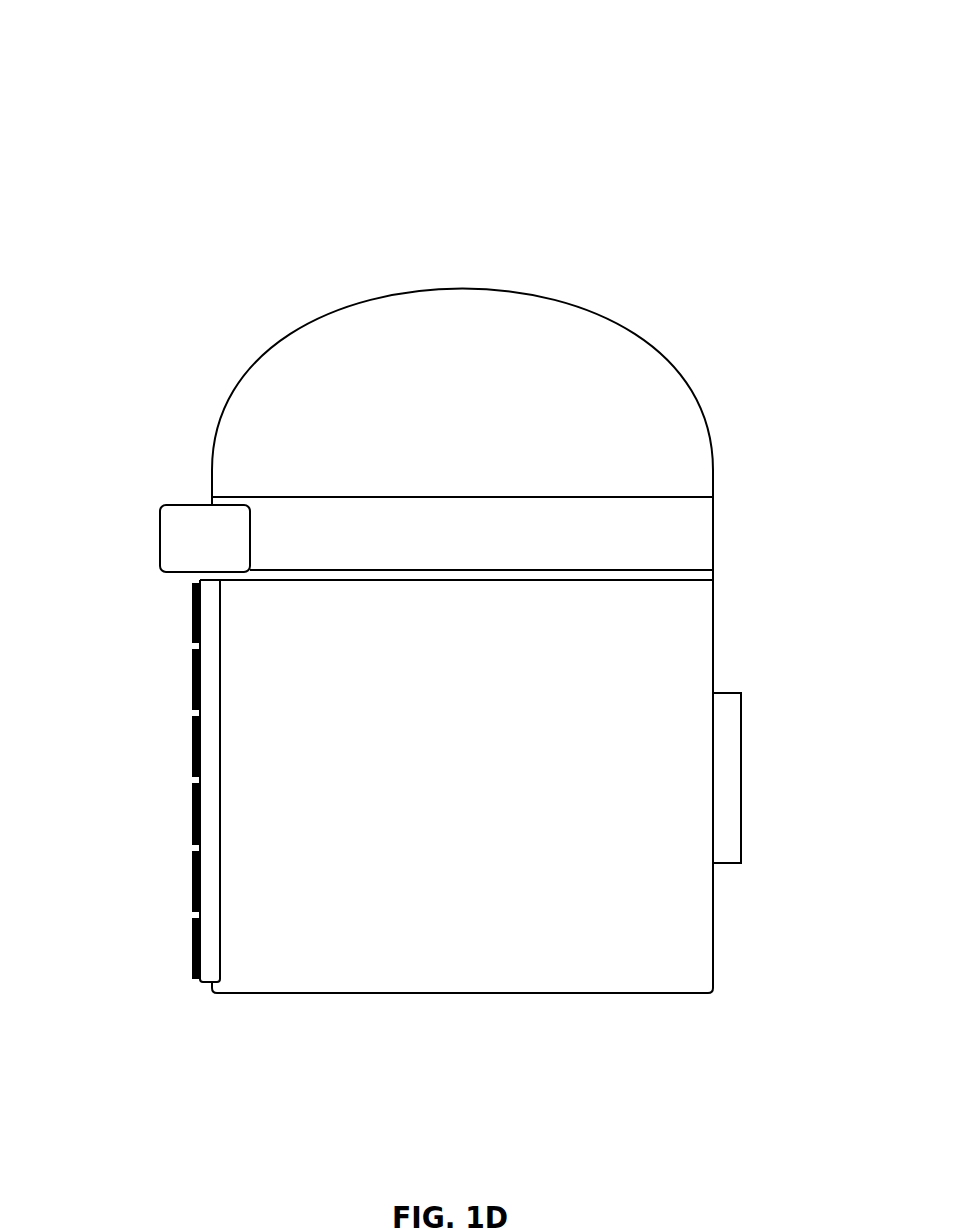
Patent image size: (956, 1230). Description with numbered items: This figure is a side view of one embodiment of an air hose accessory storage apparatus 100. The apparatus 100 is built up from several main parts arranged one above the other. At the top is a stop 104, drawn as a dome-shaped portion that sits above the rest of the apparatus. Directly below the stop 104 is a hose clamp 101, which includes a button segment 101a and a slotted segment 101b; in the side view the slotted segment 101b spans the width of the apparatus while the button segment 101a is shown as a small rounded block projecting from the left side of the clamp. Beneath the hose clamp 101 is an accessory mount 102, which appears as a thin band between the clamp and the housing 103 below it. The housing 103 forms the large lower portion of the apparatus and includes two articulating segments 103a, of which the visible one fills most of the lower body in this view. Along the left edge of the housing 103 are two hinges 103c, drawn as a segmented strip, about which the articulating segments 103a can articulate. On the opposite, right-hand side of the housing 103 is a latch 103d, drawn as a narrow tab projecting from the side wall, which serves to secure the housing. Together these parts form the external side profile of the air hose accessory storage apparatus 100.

The air hose accessory storage apparatus 100 is at (93, 60).
The hose clamp 101 is at (488, 435).
The button segment 101a is at (205, 538).
The slotted segment 101b is at (462, 533).
The accessory mount 102 is at (567, 577).
The housing 103 is at (119, 618).
The articulating segments 103a is at (462, 786).
The hinges 103c is at (192, 800).
The latch 103d is at (741, 795).
The stop 104 is at (462, 393).